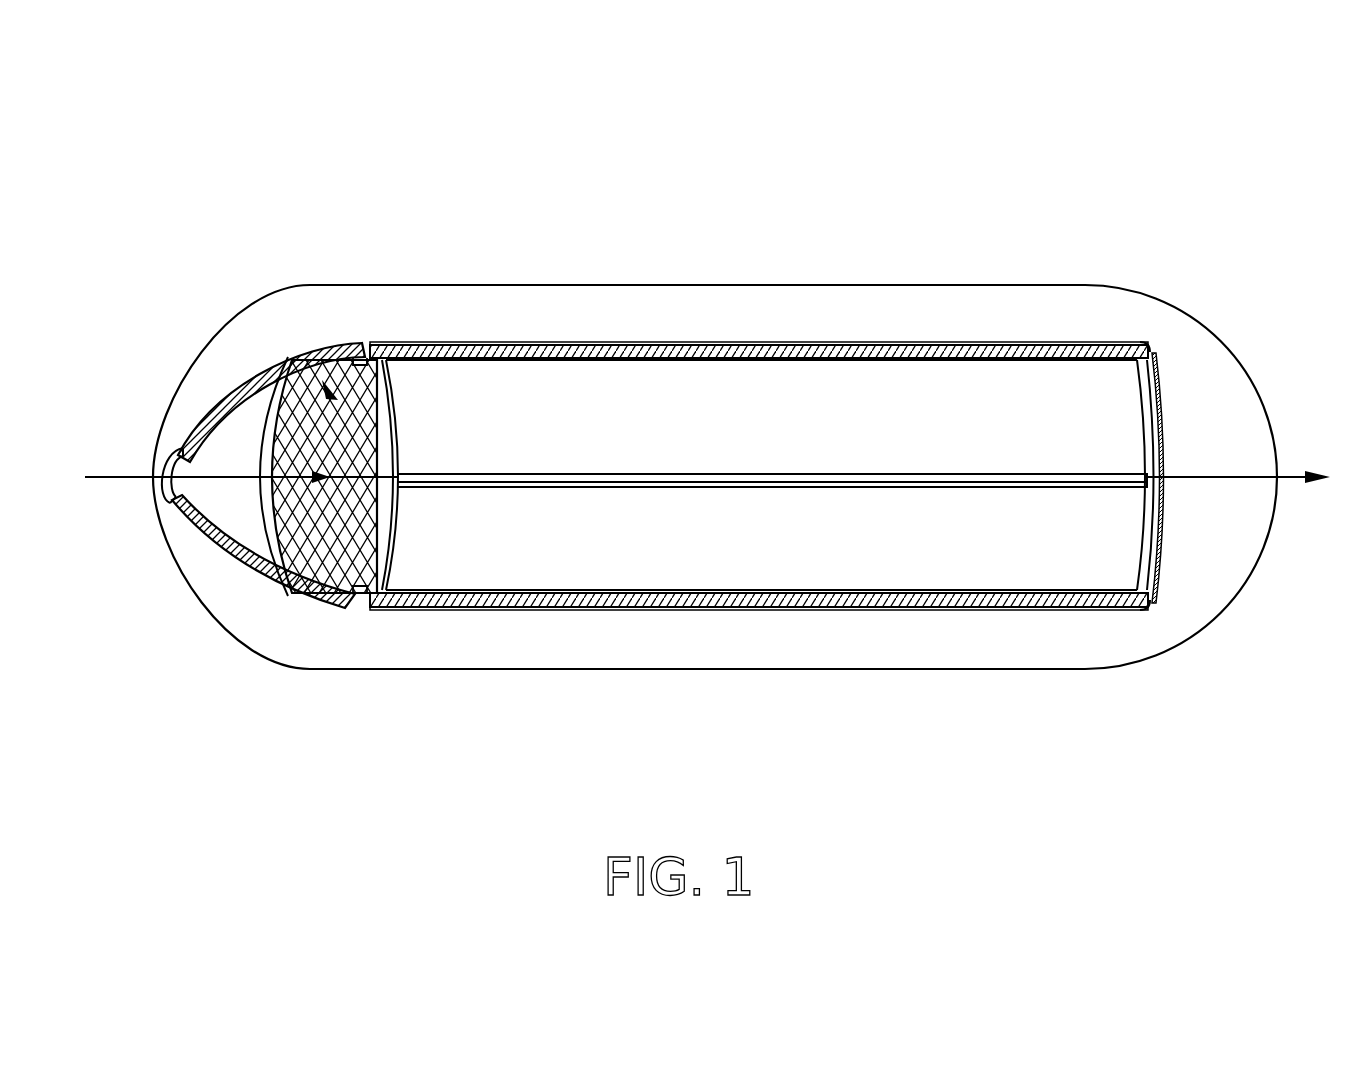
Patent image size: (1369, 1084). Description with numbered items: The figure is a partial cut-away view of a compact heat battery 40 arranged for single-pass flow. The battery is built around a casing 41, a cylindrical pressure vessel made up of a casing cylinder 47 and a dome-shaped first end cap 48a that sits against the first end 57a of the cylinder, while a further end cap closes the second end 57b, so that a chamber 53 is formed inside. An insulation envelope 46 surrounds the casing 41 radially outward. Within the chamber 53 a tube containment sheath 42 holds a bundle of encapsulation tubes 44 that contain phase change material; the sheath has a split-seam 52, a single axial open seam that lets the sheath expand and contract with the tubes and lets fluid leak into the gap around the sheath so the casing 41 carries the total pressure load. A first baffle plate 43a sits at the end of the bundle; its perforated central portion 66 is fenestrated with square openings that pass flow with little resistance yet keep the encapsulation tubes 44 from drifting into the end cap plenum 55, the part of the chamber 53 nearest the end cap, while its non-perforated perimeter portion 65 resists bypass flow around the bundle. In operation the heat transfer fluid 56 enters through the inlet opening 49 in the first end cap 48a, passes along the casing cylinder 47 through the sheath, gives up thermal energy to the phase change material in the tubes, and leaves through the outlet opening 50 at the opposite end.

The compact heat battery 40 is at (212, 164).
The casing 41 is at (537, 592).
The tube containment sheath 42 is at (727, 573).
The first baffle plate 43a is at (307, 350).
The encapsulation tubes 44 is at (595, 480).
The insulation envelope 46 is at (958, 645).
The casing cylinder 47 is at (584, 333).
The first end cap 48a is at (258, 375).
The inlet opening 49 is at (168, 500).
The outlet opening 50 is at (1277, 460).
The split-seam 52 is at (1097, 487).
The chamber 53 is at (752, 451).
The end cap plenum 55 is at (242, 467).
The heat transfer fluid 56 is at (110, 476).
The first end of the casing cylinder 57a is at (381, 330).
The second end of the casing cylinder 57b is at (1133, 322).
The non-perforated perimeter portion 65 is at (265, 530).
The perforated central portion 66 is at (365, 542).